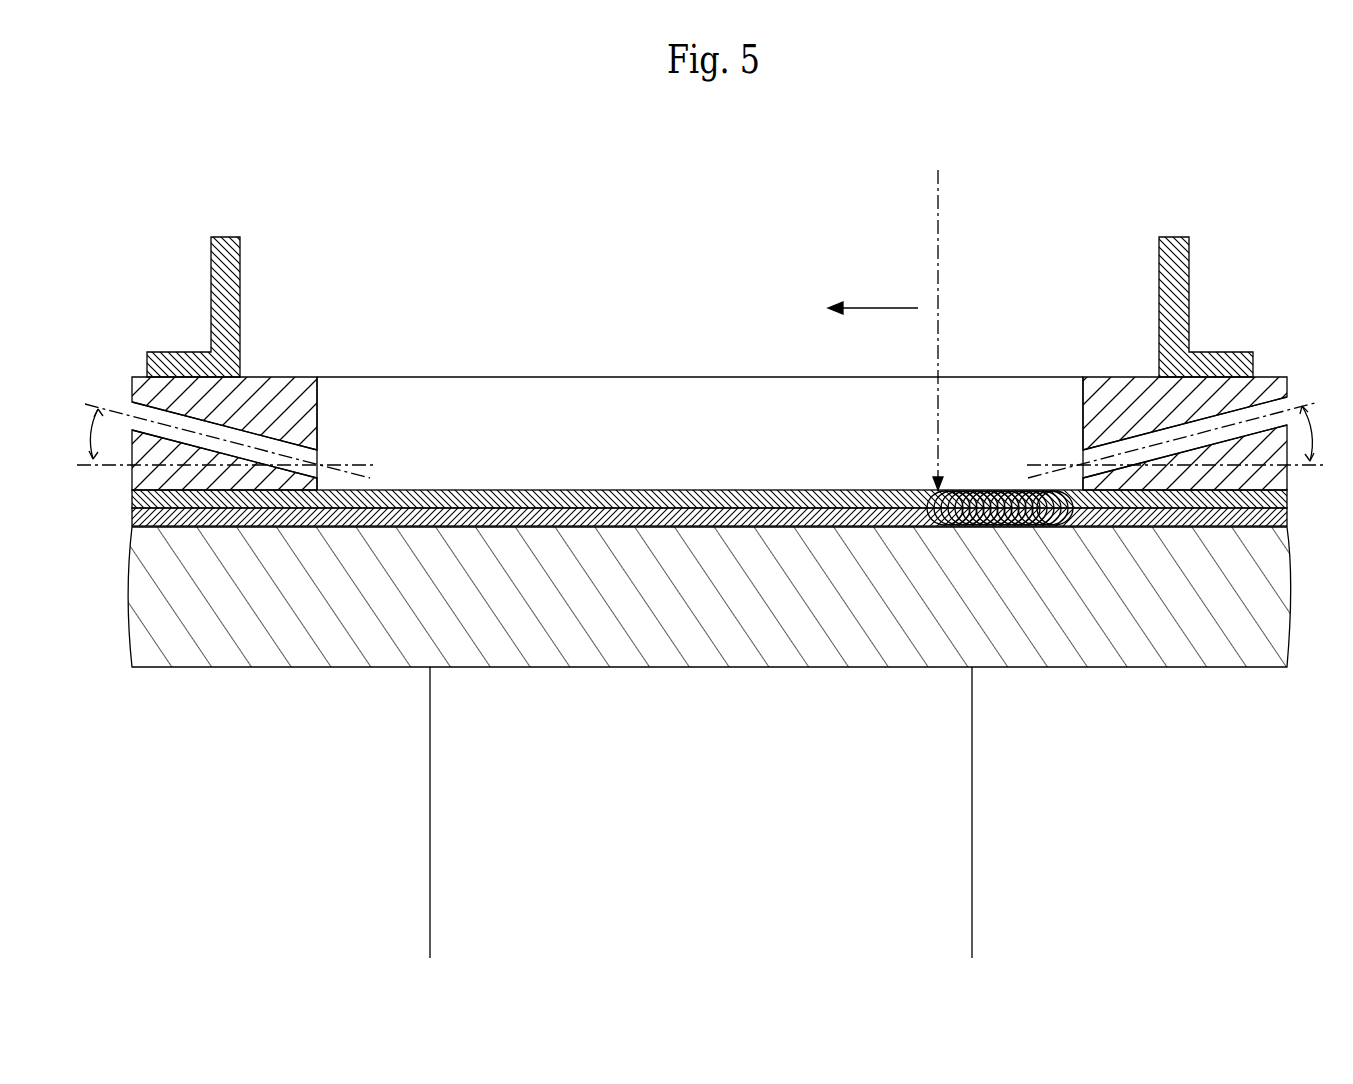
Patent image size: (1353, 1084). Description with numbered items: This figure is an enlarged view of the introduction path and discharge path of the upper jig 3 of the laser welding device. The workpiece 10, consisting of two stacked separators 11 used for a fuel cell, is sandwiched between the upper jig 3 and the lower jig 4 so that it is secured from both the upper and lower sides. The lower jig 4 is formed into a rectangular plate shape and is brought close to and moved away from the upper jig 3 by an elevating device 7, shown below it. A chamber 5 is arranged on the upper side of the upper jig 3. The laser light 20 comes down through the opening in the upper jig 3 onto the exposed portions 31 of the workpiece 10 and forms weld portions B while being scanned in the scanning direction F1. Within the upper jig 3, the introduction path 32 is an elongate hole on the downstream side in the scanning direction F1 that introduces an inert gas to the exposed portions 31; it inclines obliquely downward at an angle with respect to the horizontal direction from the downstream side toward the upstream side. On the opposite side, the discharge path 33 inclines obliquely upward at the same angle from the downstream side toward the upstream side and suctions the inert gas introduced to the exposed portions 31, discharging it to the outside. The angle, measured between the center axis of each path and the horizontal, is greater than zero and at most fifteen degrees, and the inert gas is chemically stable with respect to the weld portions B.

The upper jig 3 is at (1271, 377).
The exposed portions 31 is at (318, 413).
The introduction path 32 is at (264, 435).
The discharge path 33 is at (1134, 435).
The lower jig 4 is at (288, 660).
The chamber 5 is at (1192, 279).
The elevating device 7 is at (945, 843).
The workpiece 10 is at (709, 613).
The separator 11 is at (1208, 500).
The laser light 20 is at (942, 225).
The weld portions B is at (980, 527).
The scanning direction F1 is at (882, 305).